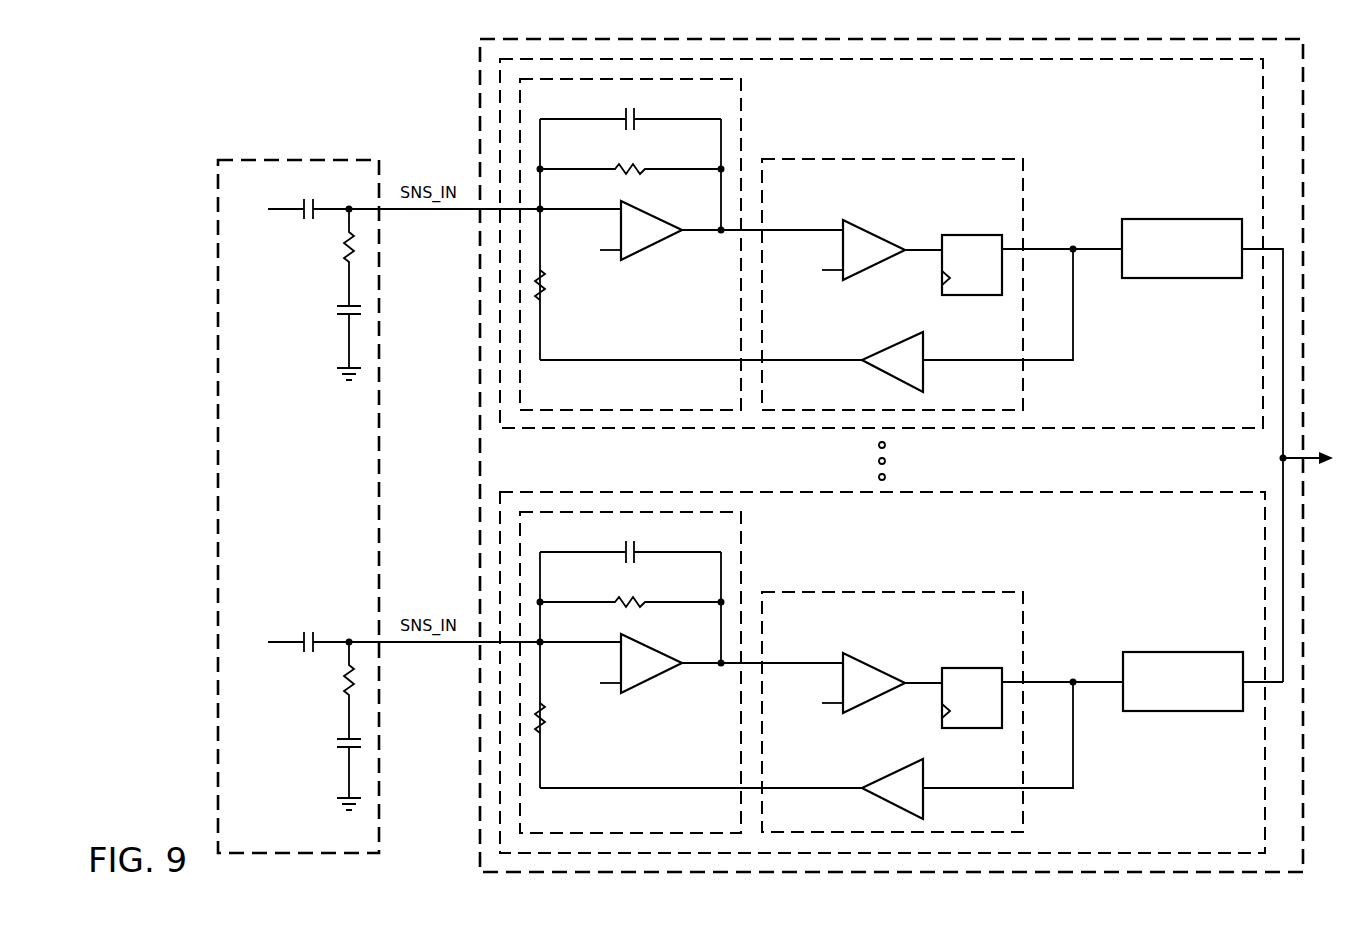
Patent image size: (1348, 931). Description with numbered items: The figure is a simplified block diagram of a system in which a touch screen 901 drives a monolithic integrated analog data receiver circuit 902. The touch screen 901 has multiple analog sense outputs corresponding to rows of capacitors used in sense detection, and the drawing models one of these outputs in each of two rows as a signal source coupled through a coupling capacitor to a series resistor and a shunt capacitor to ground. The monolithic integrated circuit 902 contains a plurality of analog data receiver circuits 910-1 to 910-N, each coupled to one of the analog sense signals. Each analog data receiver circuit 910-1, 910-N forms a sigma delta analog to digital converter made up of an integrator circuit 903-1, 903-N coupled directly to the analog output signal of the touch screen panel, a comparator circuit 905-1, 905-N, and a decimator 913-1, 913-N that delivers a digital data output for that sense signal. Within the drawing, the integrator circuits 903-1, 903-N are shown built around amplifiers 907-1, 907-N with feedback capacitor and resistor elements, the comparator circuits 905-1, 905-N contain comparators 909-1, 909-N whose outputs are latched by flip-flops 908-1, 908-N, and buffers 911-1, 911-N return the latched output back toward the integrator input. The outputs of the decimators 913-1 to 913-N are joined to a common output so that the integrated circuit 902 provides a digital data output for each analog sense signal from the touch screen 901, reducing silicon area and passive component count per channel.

The touch screen 901 is at (214, 431).
The monolithic integrated analog data receiver circuit 902 is at (476, 431).
The integrator circuit 903-1 is at (748, 136).
The integrator circuit 903-N is at (748, 564).
The comparator circuit 905-1 is at (938, 134).
The comparator circuit 905-N is at (938, 567).
The operational amplifier 907-1 is at (652, 248).
The operational amplifier 907-N is at (652, 681).
The D flip-flop 908-1 is at (970, 234).
The D flip-flop 908-N is at (970, 728).
The comparator 909-1 is at (890, 216).
The comparator 909-N is at (890, 649).
The analog data receiver circuit 910-1 is at (1170, 137).
The analog data receiver circuit 910-N is at (1174, 602).
The feedback buffer 911-1 is at (868, 356).
The feedback buffer 911-N is at (868, 783).
The decimator 913-1 is at (1184, 218).
The decimator 913-N is at (1182, 711).